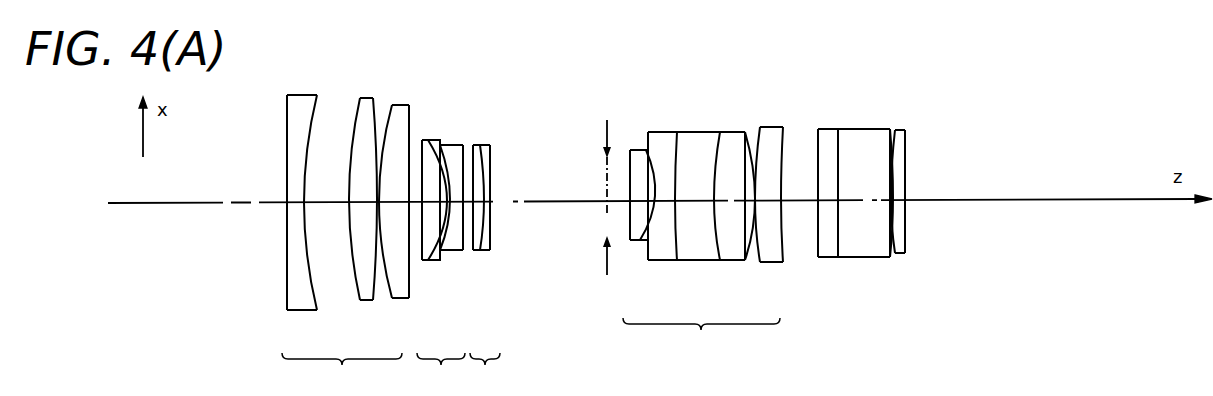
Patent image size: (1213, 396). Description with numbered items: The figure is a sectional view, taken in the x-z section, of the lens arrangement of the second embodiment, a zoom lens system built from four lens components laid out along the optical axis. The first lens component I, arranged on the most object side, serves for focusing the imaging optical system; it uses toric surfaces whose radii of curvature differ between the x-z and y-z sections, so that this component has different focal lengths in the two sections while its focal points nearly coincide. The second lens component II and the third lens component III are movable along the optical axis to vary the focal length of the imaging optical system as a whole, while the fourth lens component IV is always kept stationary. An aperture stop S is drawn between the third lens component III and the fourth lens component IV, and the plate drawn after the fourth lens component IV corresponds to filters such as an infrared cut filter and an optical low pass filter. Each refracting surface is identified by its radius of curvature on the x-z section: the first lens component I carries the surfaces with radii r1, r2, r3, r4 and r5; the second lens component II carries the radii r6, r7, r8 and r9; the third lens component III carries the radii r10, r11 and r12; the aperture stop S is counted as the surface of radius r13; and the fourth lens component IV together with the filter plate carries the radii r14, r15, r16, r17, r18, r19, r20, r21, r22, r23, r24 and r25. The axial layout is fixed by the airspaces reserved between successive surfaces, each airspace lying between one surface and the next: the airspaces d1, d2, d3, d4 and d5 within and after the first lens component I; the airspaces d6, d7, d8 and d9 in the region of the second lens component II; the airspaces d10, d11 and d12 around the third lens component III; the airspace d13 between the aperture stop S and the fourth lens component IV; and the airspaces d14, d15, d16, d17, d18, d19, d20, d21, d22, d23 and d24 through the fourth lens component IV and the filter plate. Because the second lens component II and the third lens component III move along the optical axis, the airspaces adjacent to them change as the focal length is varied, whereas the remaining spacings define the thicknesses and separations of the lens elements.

The radius of curvature of the first surface r1 is at (285, 118).
The radius of curvature of the second surface r2 is at (325, 112).
The radius of curvature of the third surface r3 is at (353, 117).
The radius of curvature of the fourth surface r4 is at (387, 117).
The radius of curvature of the fifth surface r5 is at (391, 113).
The radius of curvature of the sixth surface r6 is at (418, 150).
The radius of curvature of the seventh surface r7 is at (435, 173).
The radius of curvature of the eighth surface r8 is at (446, 158).
The radius of curvature of the ninth surface r9 is at (466, 157).
The radius of curvature of the tenth surface r10 is at (474, 155).
The radius of curvature of the eleventh surface r11 is at (480, 158).
The radius of curvature of the twelfth surface r12 is at (493, 167).
The radius of curvature of the thirteenth surface r13 is at (600, 130).
The radius of curvature of the fourteenth surface r14 is at (623, 150).
The radius of curvature of the fifteenth surface r15 is at (644, 150).
The radius of curvature of the sixteenth surface r16 is at (658, 180).
The radius of curvature of the seventeenth surface r17 is at (710, 140).
The radius of curvature of the eighteenth surface r18 is at (748, 145).
The radius of curvature of the nineteenth surface r19 is at (756, 150).
The radius of curvature of the twentieth surface r20 is at (782, 140).
The radius of curvature of the twenty-first surface r21 is at (818, 142).
The radius of curvature of the twenty-second surface r22 is at (838, 140).
The radius of curvature of the twenty-third surface r23 is at (890, 142).
The radius of curvature of the twenty-fourth surface r24 is at (906, 150).
The radius of curvature of the twenty-fifth surface r25 is at (907, 152).
The airspace between the first and second surfaces d1 is at (293, 211).
The airspace between the second and third surfaces d2 is at (328, 215).
The airspace between the third and fourth surfaces d3 is at (360, 255).
The airspace between the fourth and fifth surfaces d4 is at (378, 255).
The airspace between the fifth and sixth surfaces d5 is at (400, 262).
The airspace between the sixth and seventh surfaces d6 is at (420, 262).
The airspace between the seventh and eighth surfaces d7 is at (433, 250).
The airspace between the eighth and ninth surfaces d8 is at (462, 250).
The airspace between the ninth and tenth surfaces d9 is at (475, 240).
The airspace between the tenth and eleventh surfaces d10 is at (488, 252).
The airspace between the eleventh and twelfth surfaces d11 is at (497, 218).
The airspace between the twelfth and thirteenth surfaces d12 is at (548, 205).
The airspace between the thirteenth and fourteenth surfaces d13 is at (614, 203).
The airspace between the fourteenth and fifteenth surfaces d14 is at (631, 206).
The airspace between the fifteenth and sixteenth surfaces d15 is at (639, 210).
The airspace between the sixteenth and seventeenth surfaces d16 is at (677, 260).
The airspace between the seventeenth and eighteenth surfaces d17 is at (730, 260).
The airspace between the eighteenth and nineteenth surfaces d18 is at (752, 262).
The airspace between the nineteenth and twentieth surfaces d19 is at (781, 263).
The airspace between the twentieth and twenty-first surfaces d20 is at (803, 210).
The airspace between the twenty-first and twenty-second surfaces d21 is at (832, 212).
The airspace between the twenty-second and twenty-third surfaces d22 is at (857, 205).
The airspace between the twenty-third and twenty-fourth surfaces d23 is at (890, 208).
The airspace between the twenty-fourth and twenty-fifth surfaces d24 is at (902, 205).
The aperture stop S is at (604, 184).
The first lens component I is at (342, 374).
The second lens component II is at (441, 374).
The third lens component III is at (485, 374).
The fourth lens component IV is at (701, 343).